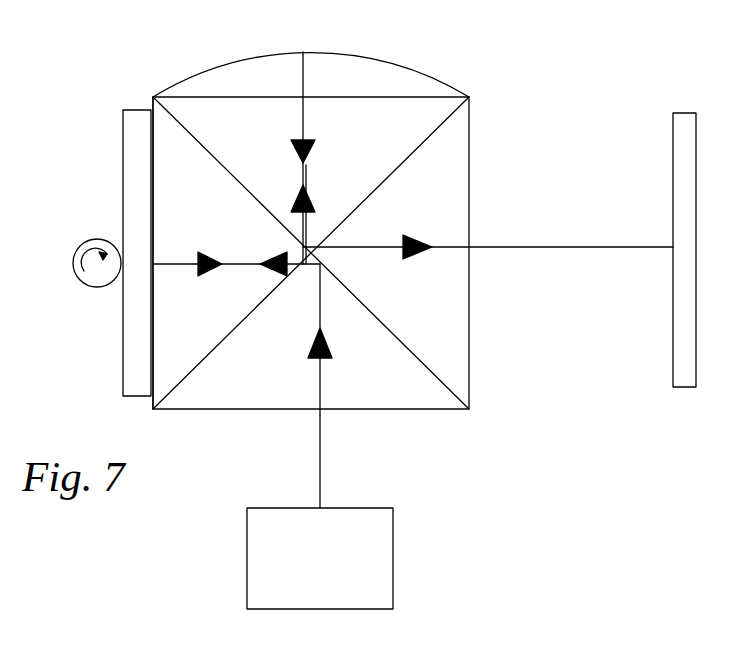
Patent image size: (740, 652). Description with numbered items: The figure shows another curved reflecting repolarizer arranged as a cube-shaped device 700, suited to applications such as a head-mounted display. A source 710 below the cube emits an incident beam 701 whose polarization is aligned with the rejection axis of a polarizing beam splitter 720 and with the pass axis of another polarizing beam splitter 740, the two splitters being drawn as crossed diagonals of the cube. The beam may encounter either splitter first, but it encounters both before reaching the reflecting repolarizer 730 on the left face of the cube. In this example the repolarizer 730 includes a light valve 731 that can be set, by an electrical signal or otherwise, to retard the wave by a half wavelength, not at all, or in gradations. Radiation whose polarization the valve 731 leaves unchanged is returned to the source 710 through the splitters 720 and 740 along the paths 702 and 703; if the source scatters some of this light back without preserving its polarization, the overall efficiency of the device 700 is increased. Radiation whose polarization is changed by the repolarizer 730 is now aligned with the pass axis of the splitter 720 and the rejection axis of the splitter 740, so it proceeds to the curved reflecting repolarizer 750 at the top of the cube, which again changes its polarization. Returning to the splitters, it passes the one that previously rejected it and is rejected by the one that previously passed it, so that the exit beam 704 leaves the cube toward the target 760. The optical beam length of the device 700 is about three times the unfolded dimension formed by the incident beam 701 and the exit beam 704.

The device 700 is at (561, 55).
The incident beam 701 is at (320, 458).
The path 702 is at (243, 268).
The path 703 is at (322, 389).
The exit beam 704 is at (460, 246).
The source 710 is at (393, 556).
The polarizing beam splitter 720 is at (190, 133).
The reflecting repolarizer 730 is at (154, 197).
The light valve 731 is at (123, 165).
The polarizing beam splitter 740 is at (197, 366).
The reflecting repolarizer 750 is at (272, 53).
The target 760 is at (676, 152).